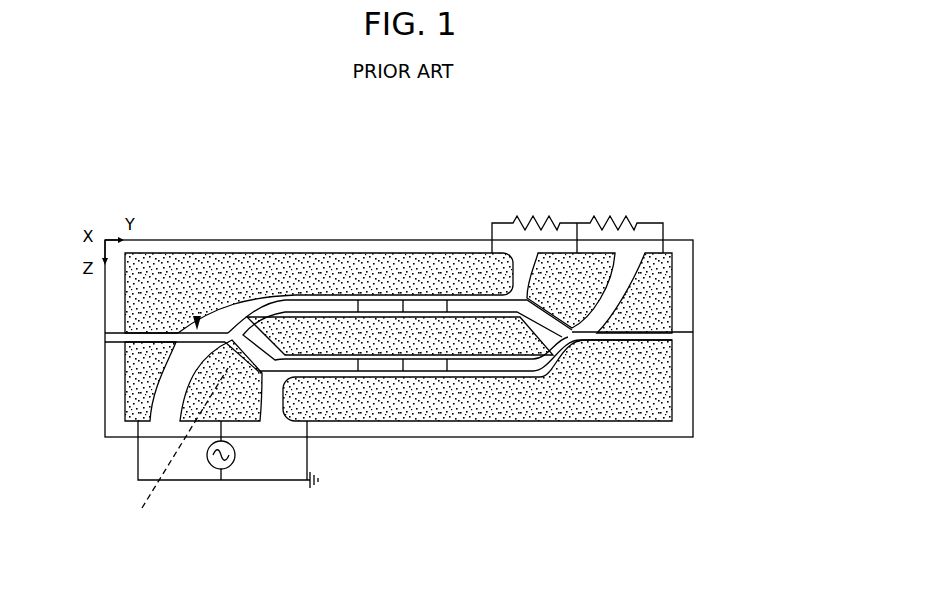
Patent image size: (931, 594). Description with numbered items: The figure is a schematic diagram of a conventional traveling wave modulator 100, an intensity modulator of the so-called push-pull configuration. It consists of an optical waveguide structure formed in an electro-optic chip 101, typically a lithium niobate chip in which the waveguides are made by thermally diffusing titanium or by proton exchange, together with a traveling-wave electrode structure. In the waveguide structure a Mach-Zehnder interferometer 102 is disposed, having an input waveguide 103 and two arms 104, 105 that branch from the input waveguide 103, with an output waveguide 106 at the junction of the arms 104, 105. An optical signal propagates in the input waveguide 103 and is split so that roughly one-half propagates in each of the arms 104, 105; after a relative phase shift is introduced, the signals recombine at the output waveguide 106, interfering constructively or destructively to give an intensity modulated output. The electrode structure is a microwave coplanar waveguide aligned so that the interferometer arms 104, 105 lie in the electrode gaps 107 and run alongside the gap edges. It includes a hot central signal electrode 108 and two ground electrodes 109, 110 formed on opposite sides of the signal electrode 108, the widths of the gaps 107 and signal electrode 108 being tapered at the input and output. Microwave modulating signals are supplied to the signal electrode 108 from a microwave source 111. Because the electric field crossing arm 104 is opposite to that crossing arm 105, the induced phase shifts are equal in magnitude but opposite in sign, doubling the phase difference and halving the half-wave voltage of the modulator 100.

The traveling wave modulator 100 is at (727, 231).
The electro-optic chip 101 is at (685, 437).
The Mach-Zehnder interferometer 102 is at (197, 316).
The input waveguide 103 is at (105, 333).
The interferometer arm 104 is at (258, 298).
The interferometer arm 105 is at (166, 447).
The output waveguide 106 is at (693, 332).
The electrode gaps 107 is at (318, 290).
The signal electrode 108 is at (247, 413).
The ground electrode 109 is at (123, 422).
The ground electrode 110 is at (307, 421).
The microwave source 111 is at (216, 469).